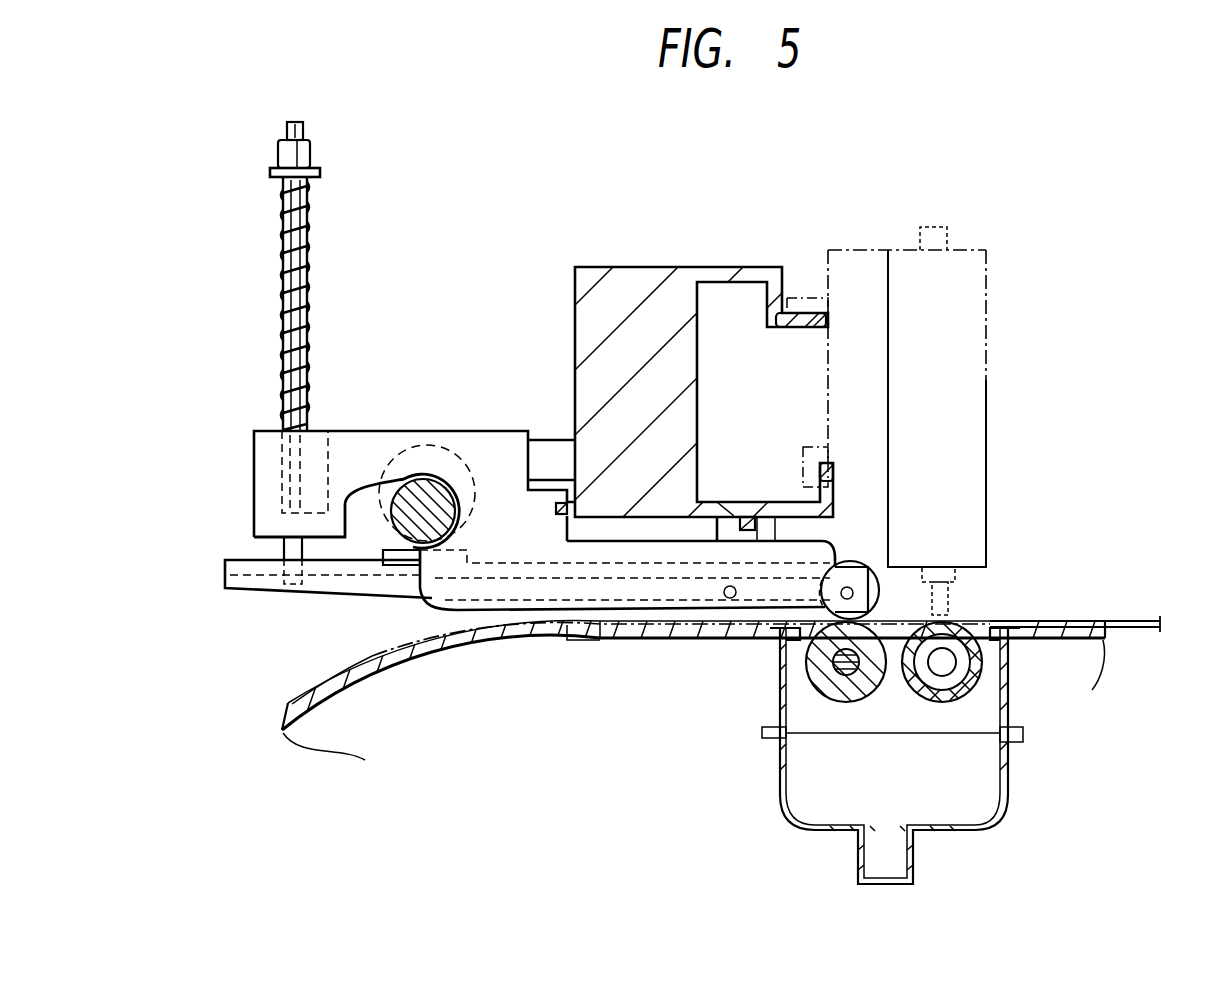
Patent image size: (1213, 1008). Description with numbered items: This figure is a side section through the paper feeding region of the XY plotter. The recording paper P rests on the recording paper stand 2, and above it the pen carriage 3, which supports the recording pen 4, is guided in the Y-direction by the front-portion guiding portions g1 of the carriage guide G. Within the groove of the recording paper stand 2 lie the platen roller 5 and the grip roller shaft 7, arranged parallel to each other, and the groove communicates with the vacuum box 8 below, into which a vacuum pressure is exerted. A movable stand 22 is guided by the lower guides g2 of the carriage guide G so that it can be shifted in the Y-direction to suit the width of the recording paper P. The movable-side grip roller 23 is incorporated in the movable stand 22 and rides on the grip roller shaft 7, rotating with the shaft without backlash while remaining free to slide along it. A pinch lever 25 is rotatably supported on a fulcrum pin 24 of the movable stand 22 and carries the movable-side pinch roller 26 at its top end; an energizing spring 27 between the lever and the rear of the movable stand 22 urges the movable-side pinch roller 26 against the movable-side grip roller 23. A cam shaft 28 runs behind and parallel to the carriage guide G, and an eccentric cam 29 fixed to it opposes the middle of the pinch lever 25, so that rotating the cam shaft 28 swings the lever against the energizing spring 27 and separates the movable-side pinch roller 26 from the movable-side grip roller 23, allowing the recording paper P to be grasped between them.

The energizing spring 27 is at (307, 302).
The movable stand 22 is at (500, 432).
The cam shaft 28 is at (416, 495).
The eccentric cam 29 is at (456, 445).
The pinch lever 25 is at (346, 585).
The fulcrum pin 24 is at (730, 598).
The carriage guide G is at (634, 293).
The front-portion guiding portions g1 is at (833, 476).
The lower guides g2 is at (770, 484).
The pen carriage 3 is at (986, 385).
The recording pen 4 is at (947, 235).
The movable-side pinch roller 26 is at (870, 584).
The recording paper P is at (1066, 619).
The recording paper stand 2 is at (1080, 642).
The movable-side grip roller 23 is at (812, 680).
The grip roller shaft 7 is at (846, 668).
The platen roller 5 is at (972, 684).
The vacuum box 8 is at (980, 834).